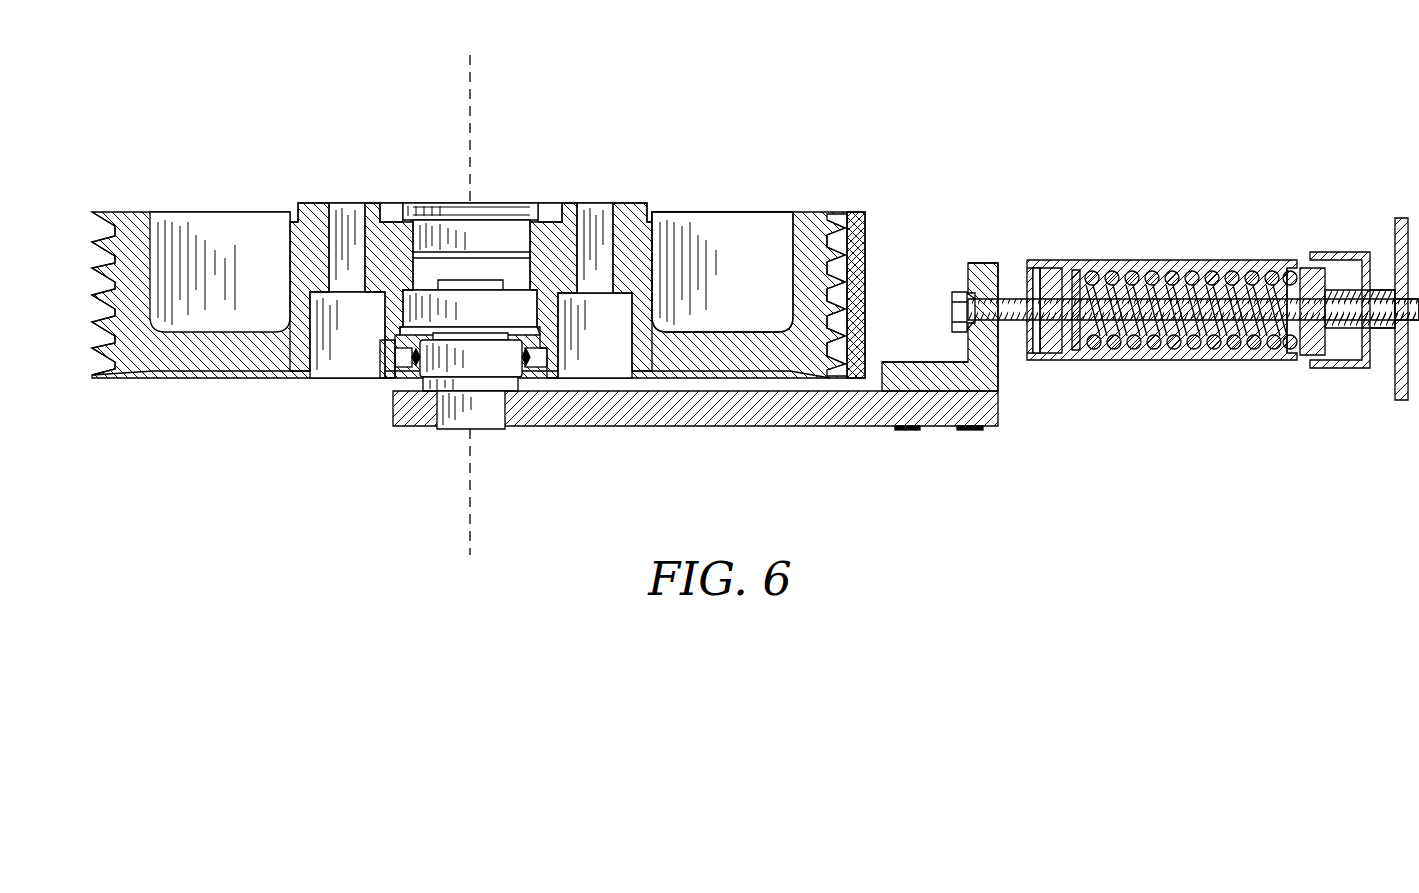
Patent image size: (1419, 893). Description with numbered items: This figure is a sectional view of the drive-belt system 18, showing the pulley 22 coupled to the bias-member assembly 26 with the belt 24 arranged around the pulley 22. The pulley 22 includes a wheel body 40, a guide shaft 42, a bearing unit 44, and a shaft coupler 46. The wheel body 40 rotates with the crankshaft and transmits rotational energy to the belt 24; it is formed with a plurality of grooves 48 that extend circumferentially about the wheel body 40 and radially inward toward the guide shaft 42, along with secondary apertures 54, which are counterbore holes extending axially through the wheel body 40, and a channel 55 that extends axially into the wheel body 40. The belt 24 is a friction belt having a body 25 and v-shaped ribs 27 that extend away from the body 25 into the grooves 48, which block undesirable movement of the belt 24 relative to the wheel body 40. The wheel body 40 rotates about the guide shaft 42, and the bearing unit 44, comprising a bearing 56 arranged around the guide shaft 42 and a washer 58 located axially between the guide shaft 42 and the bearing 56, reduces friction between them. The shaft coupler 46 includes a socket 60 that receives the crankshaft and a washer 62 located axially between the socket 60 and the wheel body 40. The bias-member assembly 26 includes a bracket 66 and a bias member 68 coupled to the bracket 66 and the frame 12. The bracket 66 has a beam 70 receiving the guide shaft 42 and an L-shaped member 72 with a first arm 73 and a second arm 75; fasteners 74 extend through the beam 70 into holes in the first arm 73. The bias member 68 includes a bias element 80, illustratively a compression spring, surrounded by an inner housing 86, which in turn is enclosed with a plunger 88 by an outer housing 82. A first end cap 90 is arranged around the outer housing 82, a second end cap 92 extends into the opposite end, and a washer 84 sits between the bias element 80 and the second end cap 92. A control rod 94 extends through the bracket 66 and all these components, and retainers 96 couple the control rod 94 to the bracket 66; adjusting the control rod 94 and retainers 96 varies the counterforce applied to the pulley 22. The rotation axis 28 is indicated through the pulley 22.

The frame 12 is at (1405, 392).
The drive-belt system 18 is at (972, 93).
The pulley 22 is at (247, 164).
The belt 24 is at (887, 261).
The body 25 is at (856, 228).
The bias-member assembly 26 is at (1185, 326).
The v-shaped ribs 27 is at (841, 224).
The pulley axis 28 is at (470, 510).
The wheel body 40 is at (230, 360).
The guide shaft 42 is at (456, 431).
The bearing unit 44 is at (480, 264).
The shaft coupler 46 is at (448, 298).
The grooves 48 is at (100, 230).
The secondary apertures 54 is at (601, 220).
The channel 55 is at (745, 245).
The bearing 56 is at (389, 326).
The washer 58 is at (535, 355).
The socket 60 is at (430, 203).
The washer 62 is at (540, 220).
The bracket 66 is at (818, 442).
The bias member 68 is at (1185, 333).
The beam 70 is at (682, 453).
The L-shaped member 72 is at (966, 304).
The first arm 73 is at (935, 358).
The fasteners 74 is at (905, 430).
The second arm 75 is at (983, 261).
The bias element 80 is at (1140, 361).
The outer housing 82 is at (1250, 362).
The washer 84 is at (1080, 270).
The inner housing 86 is at (1183, 371).
The plunger 88 is at (1310, 280).
The first end cap 90 is at (1358, 254).
The second end cap 92 is at (1055, 342).
The control rod 94 is at (1008, 310).
The retainers 96 is at (1383, 330).